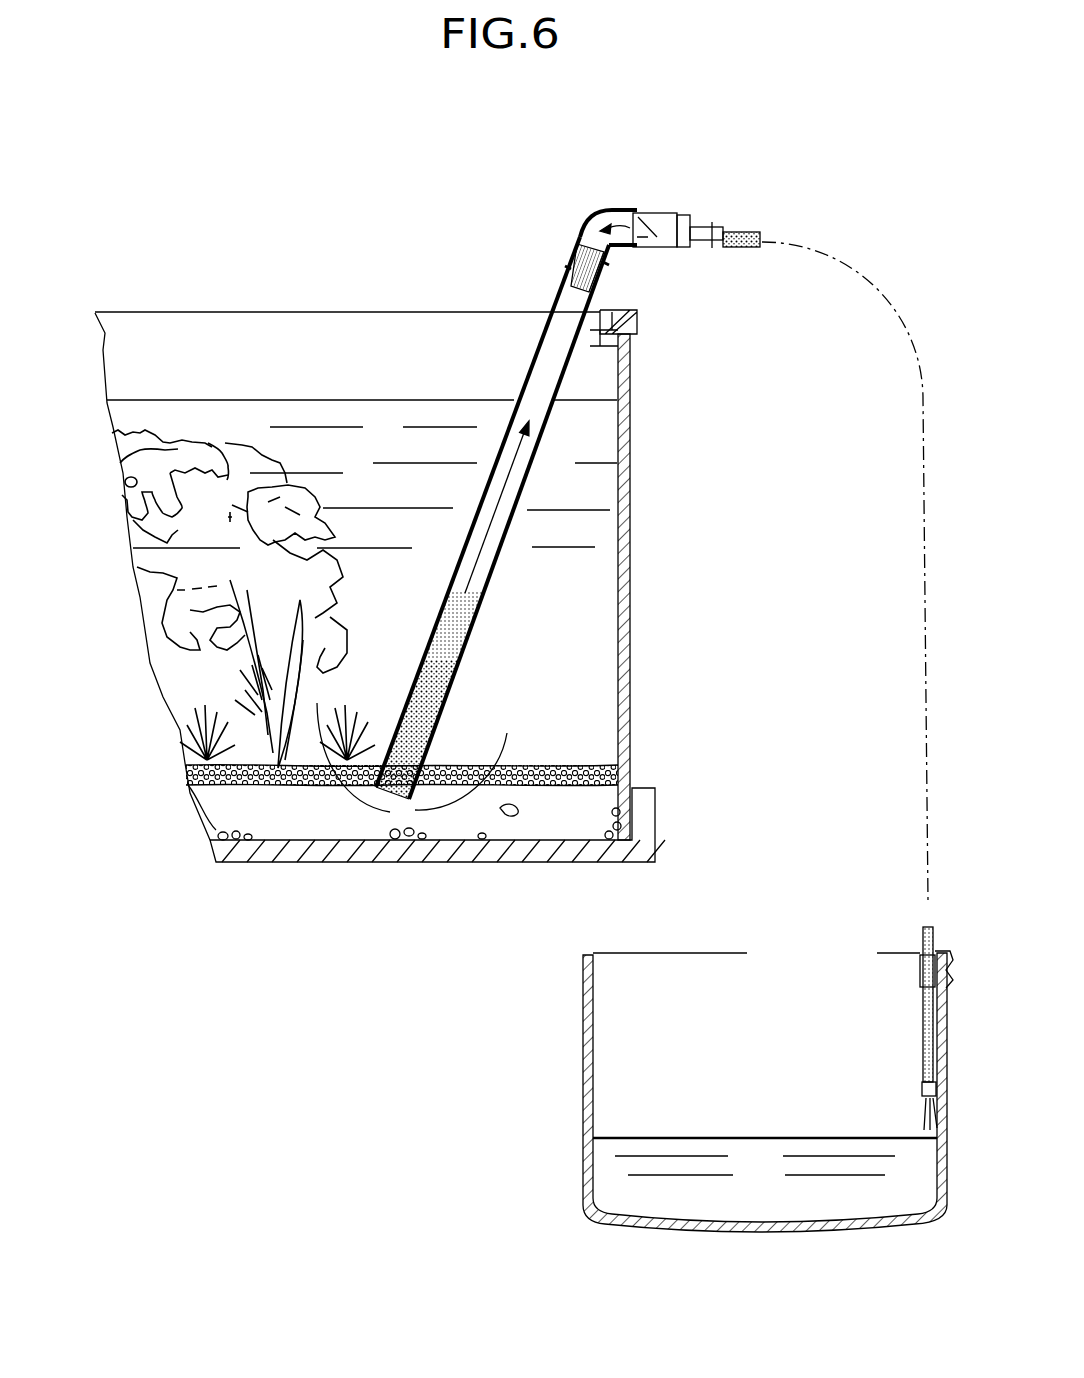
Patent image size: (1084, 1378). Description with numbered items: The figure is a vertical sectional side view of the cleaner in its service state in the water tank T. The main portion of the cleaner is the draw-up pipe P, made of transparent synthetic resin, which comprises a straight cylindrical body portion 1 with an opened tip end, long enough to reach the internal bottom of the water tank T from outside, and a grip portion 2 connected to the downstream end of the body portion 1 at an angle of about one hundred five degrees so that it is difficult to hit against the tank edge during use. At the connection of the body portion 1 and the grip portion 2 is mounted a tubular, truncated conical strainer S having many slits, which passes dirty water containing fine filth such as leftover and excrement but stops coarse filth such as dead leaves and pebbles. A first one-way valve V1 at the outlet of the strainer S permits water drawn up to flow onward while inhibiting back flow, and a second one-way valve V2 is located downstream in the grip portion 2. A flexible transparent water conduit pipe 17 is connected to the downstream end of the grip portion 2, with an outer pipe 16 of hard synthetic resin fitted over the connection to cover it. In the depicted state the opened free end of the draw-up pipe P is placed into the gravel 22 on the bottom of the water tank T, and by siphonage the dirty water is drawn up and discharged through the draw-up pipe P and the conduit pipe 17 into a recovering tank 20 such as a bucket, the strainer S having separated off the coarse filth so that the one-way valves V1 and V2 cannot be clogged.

The draw-up pipe P is at (581, 182).
The body portion 1 is at (550, 303).
The grip portion 2 is at (591, 224).
The strainer S is at (572, 292).
The first one-way valve V1 is at (636, 242).
The second one-way valve V2 is at (666, 208).
The outer pipe 16 is at (711, 248).
The water conduit pipe 17 is at (750, 230).
The water tank T is at (625, 565).
The gravel 22 is at (582, 768).
The recovering tank 20 is at (583, 1100).